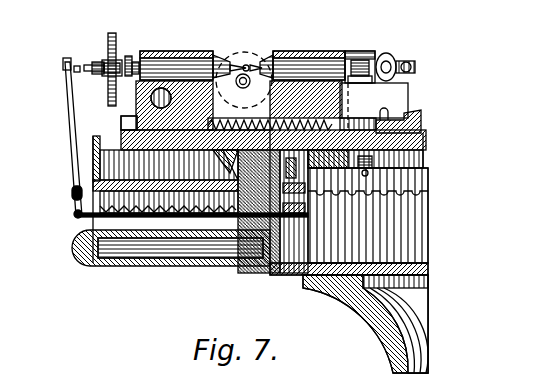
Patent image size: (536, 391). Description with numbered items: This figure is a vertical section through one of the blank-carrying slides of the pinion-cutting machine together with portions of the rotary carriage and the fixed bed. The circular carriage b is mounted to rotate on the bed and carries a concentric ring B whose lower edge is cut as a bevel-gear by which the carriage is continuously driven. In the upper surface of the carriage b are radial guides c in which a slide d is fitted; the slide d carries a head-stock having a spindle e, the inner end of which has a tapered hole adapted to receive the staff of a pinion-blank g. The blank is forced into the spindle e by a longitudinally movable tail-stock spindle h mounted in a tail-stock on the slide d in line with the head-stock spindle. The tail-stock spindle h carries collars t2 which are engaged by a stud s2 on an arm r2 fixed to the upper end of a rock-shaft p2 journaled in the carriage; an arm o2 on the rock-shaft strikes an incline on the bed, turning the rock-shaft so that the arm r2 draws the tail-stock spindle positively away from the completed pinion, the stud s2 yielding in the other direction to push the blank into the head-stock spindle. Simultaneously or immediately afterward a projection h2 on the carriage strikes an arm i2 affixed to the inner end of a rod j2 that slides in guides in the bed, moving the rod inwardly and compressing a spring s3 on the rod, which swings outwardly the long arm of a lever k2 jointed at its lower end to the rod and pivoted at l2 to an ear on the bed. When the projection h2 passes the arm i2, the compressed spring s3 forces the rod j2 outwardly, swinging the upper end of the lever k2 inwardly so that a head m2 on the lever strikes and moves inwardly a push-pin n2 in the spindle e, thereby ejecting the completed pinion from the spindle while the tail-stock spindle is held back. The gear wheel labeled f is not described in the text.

The carriage b is at (113, 127).
The radial guides c is at (114, 118).
The slide d is at (136, 106).
The head-stock spindle e is at (120, 52).
The gear wheel f is at (101, 50).
The pinion-blank g is at (238, 64).
The tail-stock spindle h is at (252, 62).
The push-pin n2 is at (86, 64).
The head m2 is at (58, 54).
The lever k2 is at (64, 150).
The pivot l2 is at (66, 186).
The spring s3 is at (175, 210).
The rod j2 is at (80, 226).
The projection h2 is at (250, 240).
The concentric ring B is at (420, 182).
The arm o2 is at (366, 155).
The arm i2 is at (284, 268).
The collars t2 is at (344, 55).
The stud s2 is at (382, 54).
The arm r2 is at (358, 62).
The rock-shaft p2 is at (356, 102).